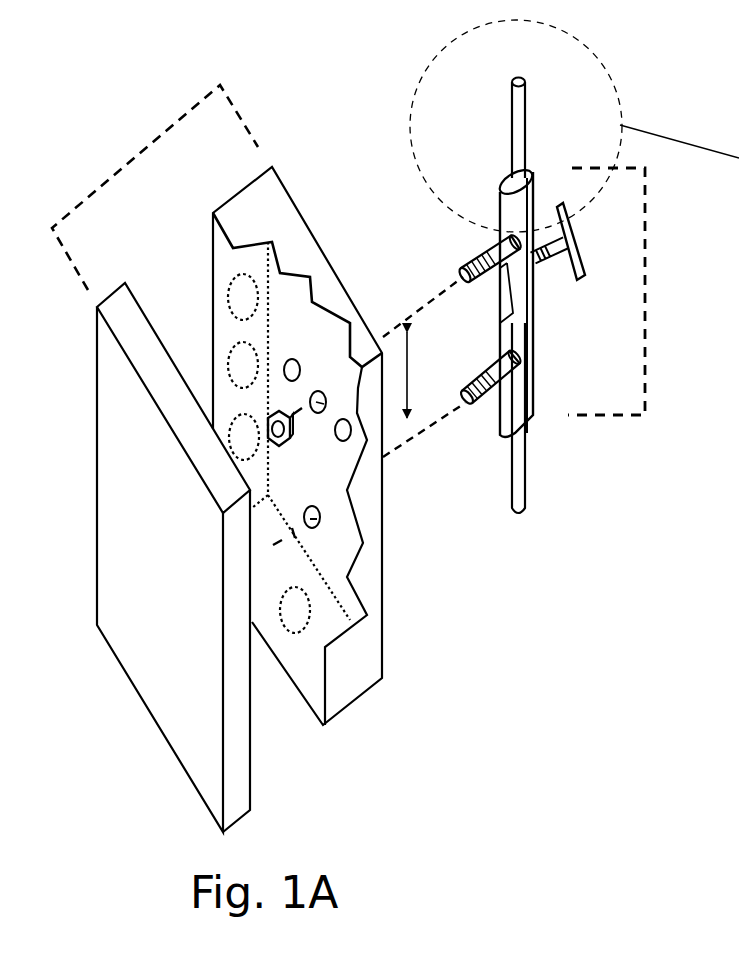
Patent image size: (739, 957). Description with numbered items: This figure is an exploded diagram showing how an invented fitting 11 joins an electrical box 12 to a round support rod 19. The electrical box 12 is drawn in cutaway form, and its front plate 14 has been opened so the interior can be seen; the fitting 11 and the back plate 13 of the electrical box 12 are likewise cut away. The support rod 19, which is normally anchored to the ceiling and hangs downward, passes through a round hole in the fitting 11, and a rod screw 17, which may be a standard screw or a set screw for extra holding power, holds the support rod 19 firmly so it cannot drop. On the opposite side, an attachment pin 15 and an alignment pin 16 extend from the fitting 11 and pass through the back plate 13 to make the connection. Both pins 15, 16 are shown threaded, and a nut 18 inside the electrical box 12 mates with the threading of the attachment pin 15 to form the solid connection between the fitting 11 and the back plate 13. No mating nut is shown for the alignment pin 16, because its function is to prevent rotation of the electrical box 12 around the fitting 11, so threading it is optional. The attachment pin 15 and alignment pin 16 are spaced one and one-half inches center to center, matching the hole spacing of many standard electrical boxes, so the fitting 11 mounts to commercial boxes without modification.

The fitting 11 is at (665, 250).
The electrical box 12 is at (117, 122).
The back plate 13 is at (362, 681).
The front plate 14 is at (160, 584).
The attachment pin 15 is at (463, 250).
The alignment pin 16 is at (482, 418).
The rod screw 17 is at (580, 283).
The nut 18 is at (272, 398).
The support rod 19 is at (517, 277).